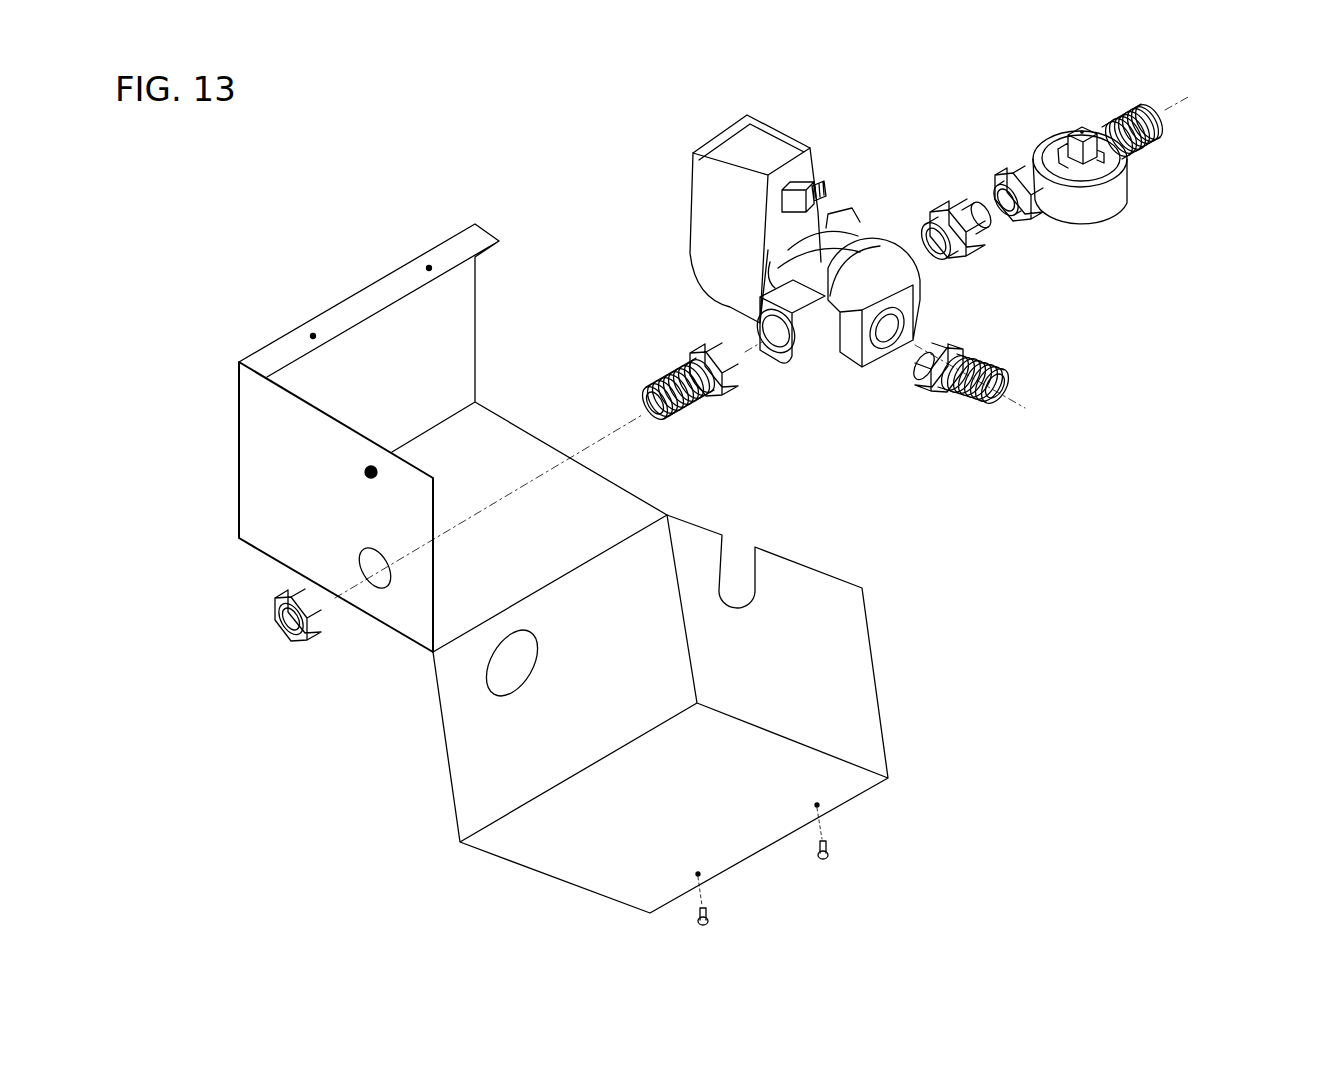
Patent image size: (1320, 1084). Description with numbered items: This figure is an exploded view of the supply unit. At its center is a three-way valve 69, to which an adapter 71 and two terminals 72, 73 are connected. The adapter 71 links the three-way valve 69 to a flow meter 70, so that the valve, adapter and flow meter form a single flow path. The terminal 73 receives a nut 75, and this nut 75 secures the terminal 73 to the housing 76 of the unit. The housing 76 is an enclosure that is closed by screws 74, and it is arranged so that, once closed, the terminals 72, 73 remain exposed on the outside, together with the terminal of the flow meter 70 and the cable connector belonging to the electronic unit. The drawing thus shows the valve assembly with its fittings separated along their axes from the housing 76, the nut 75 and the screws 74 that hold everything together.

The three-way valve 69 is at (893, 293).
The flow meter 70 is at (1102, 213).
The adapter 71 is at (975, 247).
The terminal 72 is at (998, 370).
The terminal 73 is at (725, 395).
The screws 74 is at (712, 915).
The nut 75 is at (300, 645).
The housing 76 is at (414, 368).